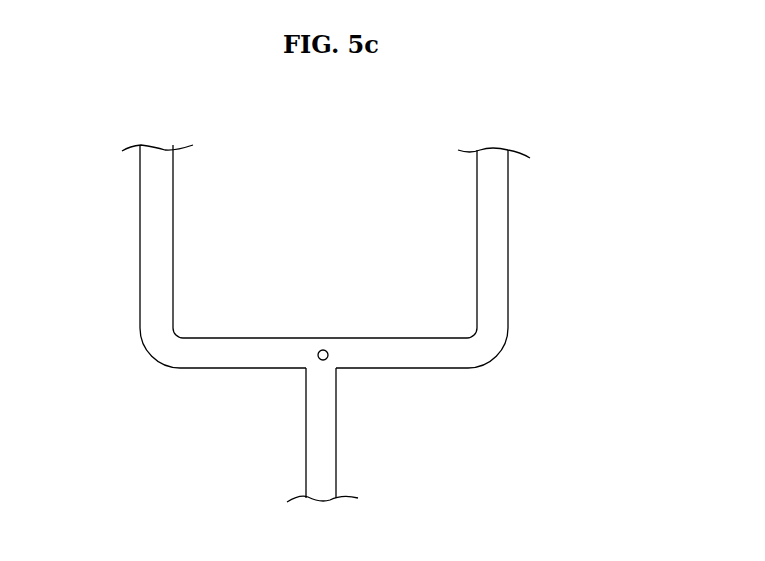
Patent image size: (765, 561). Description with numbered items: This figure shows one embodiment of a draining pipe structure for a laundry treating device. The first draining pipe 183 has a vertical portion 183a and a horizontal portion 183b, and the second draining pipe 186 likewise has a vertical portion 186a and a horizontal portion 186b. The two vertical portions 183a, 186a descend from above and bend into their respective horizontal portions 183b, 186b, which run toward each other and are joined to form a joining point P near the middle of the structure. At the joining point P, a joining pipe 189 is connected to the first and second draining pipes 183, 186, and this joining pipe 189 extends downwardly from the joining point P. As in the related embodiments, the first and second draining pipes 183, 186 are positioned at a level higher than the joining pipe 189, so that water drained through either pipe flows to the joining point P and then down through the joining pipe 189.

The second draining pipe 186 is at (145, 248).
The vertical portion 186a is at (147, 298).
The horizontal portion 186b is at (236, 360).
The first draining pipe 183 is at (509, 253).
The vertical portion 183a is at (495, 303).
The horizontal portion 183b is at (410, 360).
The joining pipe 189 is at (328, 468).
The joining point P is at (322, 348).